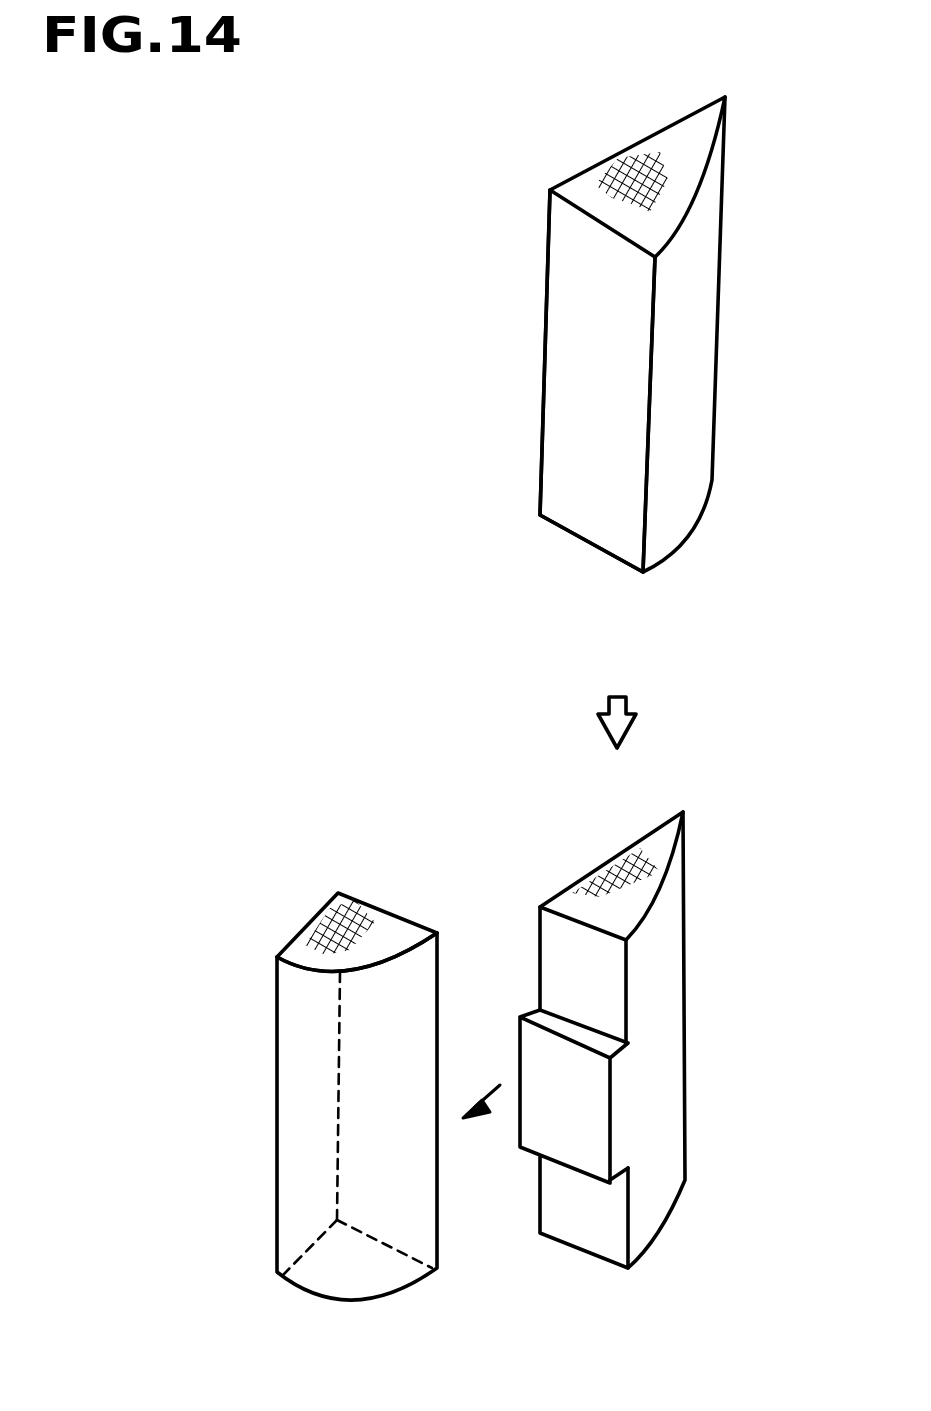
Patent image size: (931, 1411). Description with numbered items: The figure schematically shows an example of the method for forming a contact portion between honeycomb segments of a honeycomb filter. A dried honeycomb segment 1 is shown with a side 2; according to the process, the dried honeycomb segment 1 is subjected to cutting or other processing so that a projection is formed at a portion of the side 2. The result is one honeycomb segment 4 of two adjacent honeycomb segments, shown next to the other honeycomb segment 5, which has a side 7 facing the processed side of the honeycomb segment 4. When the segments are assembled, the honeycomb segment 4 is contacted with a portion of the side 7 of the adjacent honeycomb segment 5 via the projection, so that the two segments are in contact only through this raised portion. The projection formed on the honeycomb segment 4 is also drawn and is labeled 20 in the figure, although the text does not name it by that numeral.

The dried honeycomb segment 1 is at (710, 322).
The side 2 is at (556, 360).
The honeycomb segment 4 is at (683, 955).
The honeycomb segment 5 is at (288, 1035).
The side 7 is at (425, 980).
The block / projection 20 is at (545, 1137).